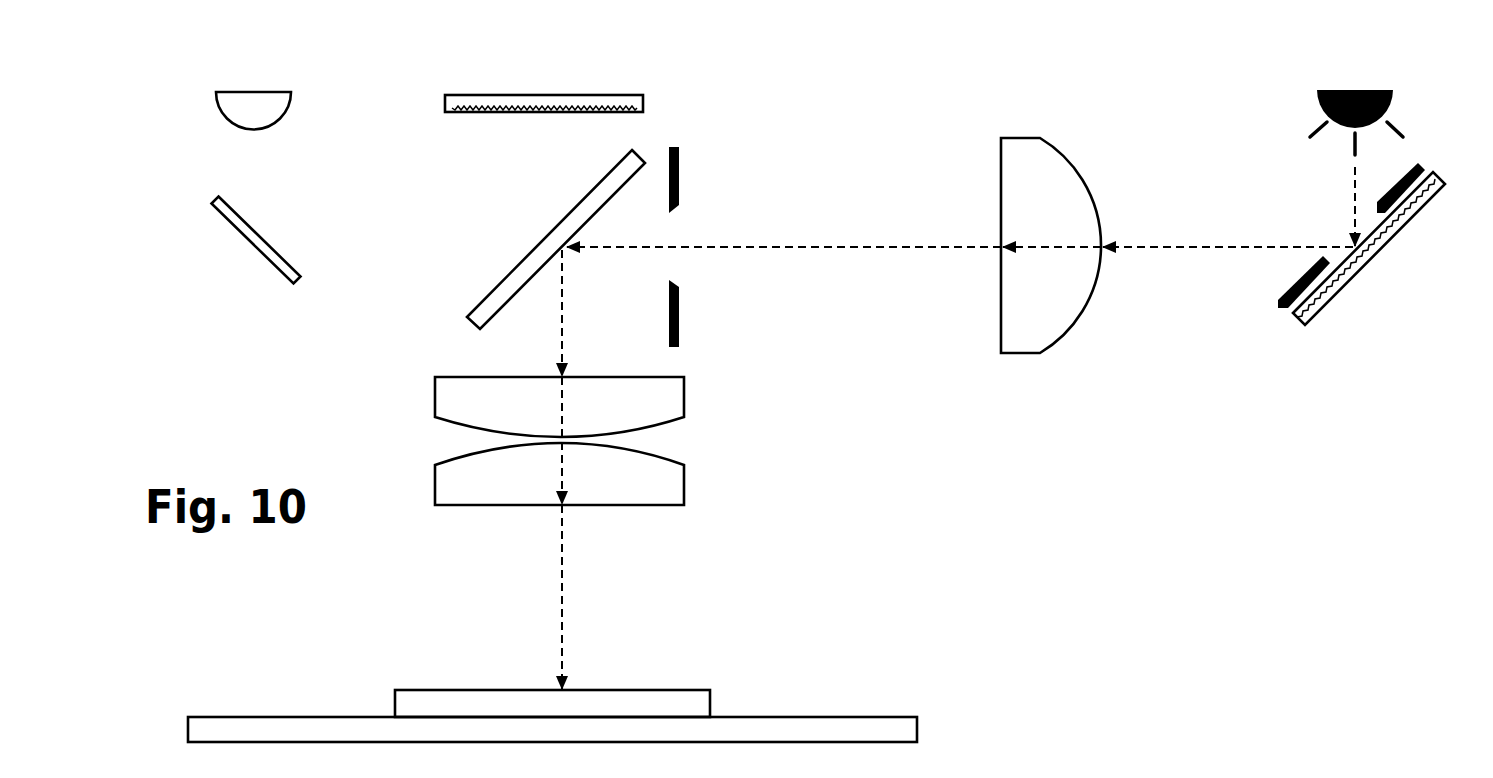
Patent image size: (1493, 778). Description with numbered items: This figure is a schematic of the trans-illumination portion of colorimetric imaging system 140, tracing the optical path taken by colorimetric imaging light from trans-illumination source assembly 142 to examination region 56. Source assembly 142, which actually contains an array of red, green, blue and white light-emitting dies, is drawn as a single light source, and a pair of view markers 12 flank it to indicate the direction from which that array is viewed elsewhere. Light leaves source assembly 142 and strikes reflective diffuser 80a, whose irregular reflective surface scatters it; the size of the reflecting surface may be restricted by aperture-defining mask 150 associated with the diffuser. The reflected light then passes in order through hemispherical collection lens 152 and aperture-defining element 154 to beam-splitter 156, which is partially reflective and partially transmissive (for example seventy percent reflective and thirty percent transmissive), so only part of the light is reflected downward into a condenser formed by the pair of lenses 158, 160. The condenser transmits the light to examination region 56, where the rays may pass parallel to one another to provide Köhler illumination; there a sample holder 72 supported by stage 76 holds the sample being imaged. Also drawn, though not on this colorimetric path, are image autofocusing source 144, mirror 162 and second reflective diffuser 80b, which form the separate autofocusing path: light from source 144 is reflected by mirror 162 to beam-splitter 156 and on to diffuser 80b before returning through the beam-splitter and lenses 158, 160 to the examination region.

The section line / viewing direction 12 is at (1298, 113).
The examination region 56 is at (574, 688).
The sample holder 72 is at (475, 690).
The stage 76 is at (213, 717).
The reflective diffuser 80a is at (1376, 255).
The reflective diffuser 80b is at (477, 93).
The colorimetric imaging system 140 is at (159, 192).
The trans-illumination source assembly 142 is at (1351, 54).
The image autofocusing source 144 is at (246, 91).
The aperture-defining mask 150 is at (1286, 295).
The hemispherical collection lens 152 is at (1097, 285).
The aperture-defining element 154 is at (679, 317).
The beam-splitter 156 is at (509, 305).
The lens 158 is at (435, 397).
The lens 160 is at (435, 483).
The mirror 162 is at (266, 262).